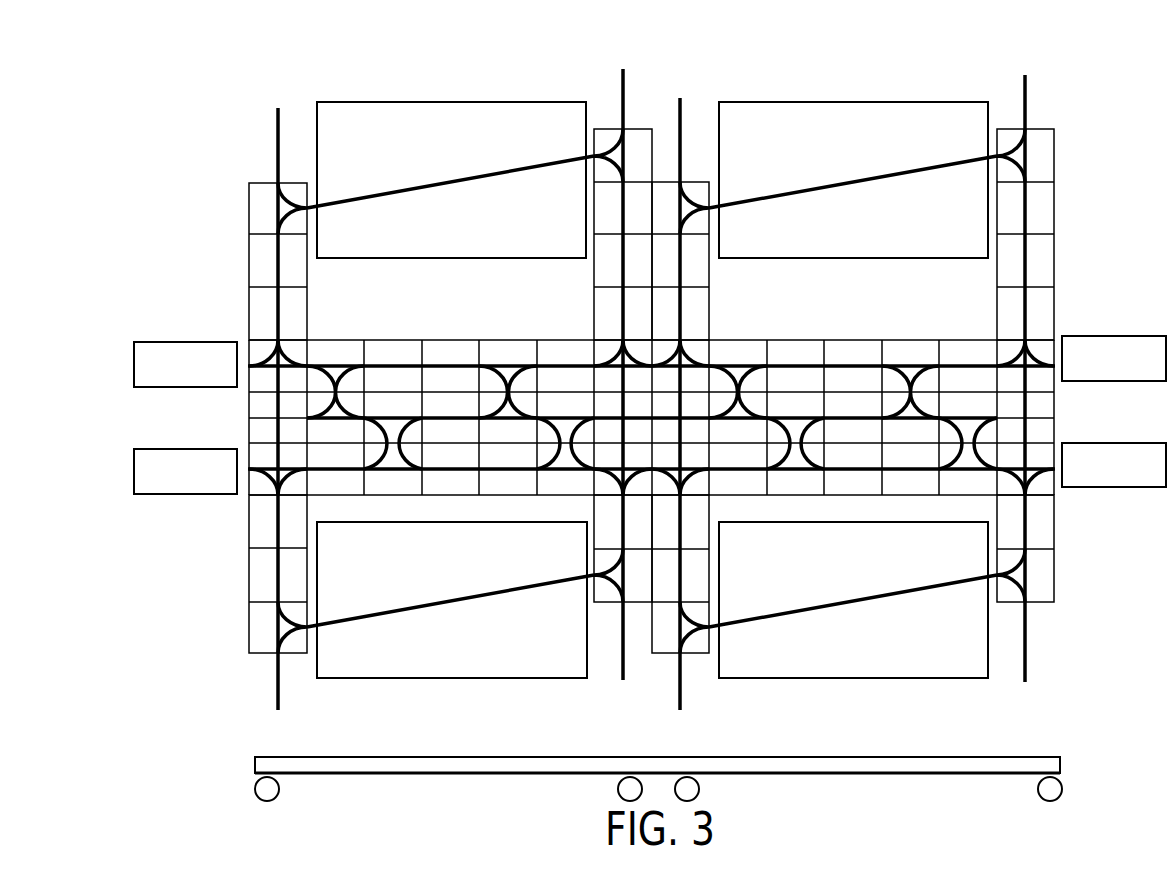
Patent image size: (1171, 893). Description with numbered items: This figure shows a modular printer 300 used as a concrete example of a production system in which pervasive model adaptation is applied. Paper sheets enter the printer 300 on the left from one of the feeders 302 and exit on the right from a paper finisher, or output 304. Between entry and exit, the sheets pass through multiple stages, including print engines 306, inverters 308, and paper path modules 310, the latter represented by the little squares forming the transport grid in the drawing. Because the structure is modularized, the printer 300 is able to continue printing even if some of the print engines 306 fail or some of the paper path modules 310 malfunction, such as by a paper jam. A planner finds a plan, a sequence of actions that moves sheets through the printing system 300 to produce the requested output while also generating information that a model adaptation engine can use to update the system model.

The modular printer 300 is at (172, 149).
The feeder 302 is at (192, 342).
The paper finisher (output) 304 is at (1123, 336).
The print engine 306 is at (482, 259).
The inverter 308 is at (577, 53).
The paper path module 310 is at (628, 407).